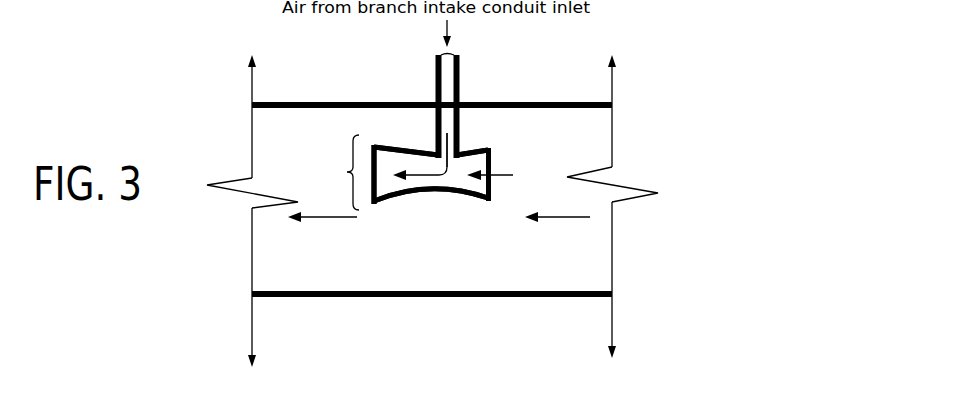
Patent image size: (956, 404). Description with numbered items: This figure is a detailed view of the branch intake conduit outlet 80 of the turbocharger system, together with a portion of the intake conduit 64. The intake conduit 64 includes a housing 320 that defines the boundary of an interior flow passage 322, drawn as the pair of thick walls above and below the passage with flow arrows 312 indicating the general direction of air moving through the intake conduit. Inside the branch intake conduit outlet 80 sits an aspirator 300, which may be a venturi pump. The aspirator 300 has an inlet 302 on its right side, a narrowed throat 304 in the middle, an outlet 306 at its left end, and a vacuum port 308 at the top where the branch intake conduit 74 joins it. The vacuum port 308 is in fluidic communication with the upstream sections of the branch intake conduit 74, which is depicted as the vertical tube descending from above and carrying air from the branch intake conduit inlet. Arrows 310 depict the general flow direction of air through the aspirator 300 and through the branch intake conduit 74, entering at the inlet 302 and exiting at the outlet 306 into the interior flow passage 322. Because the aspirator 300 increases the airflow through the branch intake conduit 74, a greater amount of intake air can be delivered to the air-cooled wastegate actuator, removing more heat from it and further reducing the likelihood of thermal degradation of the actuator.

The intake conduit 64 is at (378, 90).
The branch intake conduit 74 is at (460, 83).
The branch intake conduit outlet 80 is at (431, 185).
The aspirator 300 is at (440, 191).
The inlet 302 is at (482, 179).
The throat 304 is at (447, 177).
The outlet 306 is at (367, 204).
The vacuum port 308 is at (437, 151).
The arrows 310 is at (459, 144).
The arrows 312 is at (343, 220).
The housing 320 is at (358, 101).
The interior flow passage 322 is at (310, 182).